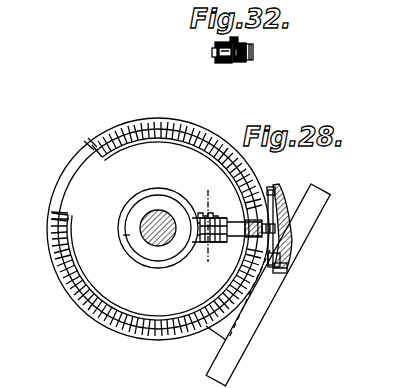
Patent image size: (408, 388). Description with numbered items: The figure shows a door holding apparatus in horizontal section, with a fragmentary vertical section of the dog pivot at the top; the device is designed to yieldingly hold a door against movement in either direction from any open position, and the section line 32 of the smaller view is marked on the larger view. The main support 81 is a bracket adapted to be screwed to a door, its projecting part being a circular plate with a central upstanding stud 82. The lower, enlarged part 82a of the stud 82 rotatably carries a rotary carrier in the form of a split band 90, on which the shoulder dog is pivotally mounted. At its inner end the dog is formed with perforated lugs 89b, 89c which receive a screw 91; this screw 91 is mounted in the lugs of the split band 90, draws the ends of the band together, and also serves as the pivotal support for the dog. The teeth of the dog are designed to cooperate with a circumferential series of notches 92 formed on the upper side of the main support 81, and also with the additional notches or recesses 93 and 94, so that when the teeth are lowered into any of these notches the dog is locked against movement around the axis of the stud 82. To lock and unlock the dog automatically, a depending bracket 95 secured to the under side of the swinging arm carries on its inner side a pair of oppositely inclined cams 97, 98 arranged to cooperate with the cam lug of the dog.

In FIG. 28, the shaft axis line 32 is at (207, 230).
In FIG. 28, the main support 81 is at (80, 181).
In FIG. 28, the central upstanding stud 82 is at (154, 239).
In FIG. 28, the lower enlarged part of the stud 82a is at (136, 208).
In FIG. 32, the lug of the shoulder dog 89b is at (248, 62).
In FIG. 32, the lug of the shoulder dog 89c is at (215, 58).
In FIG. 32, the split band 90 is at (244, 63).
In FIG. 28, the split band 90 is at (123, 235).
In FIG. 32, the screw 91 is at (253, 51).
In FIG. 28, the screw 91 is at (198, 213).
In FIG. 28, the circumferential series of notches 92 is at (108, 319).
In FIG. 28, the additional notches 93 is at (52, 223).
In FIG. 28, the additional notches 94 is at (90, 147).
In FIG. 28, the depending bracket 95 is at (287, 196).
In FIG. 28, the inclined cam 97 is at (272, 187).
In FIG. 28, the inclined cam 98 is at (287, 268).